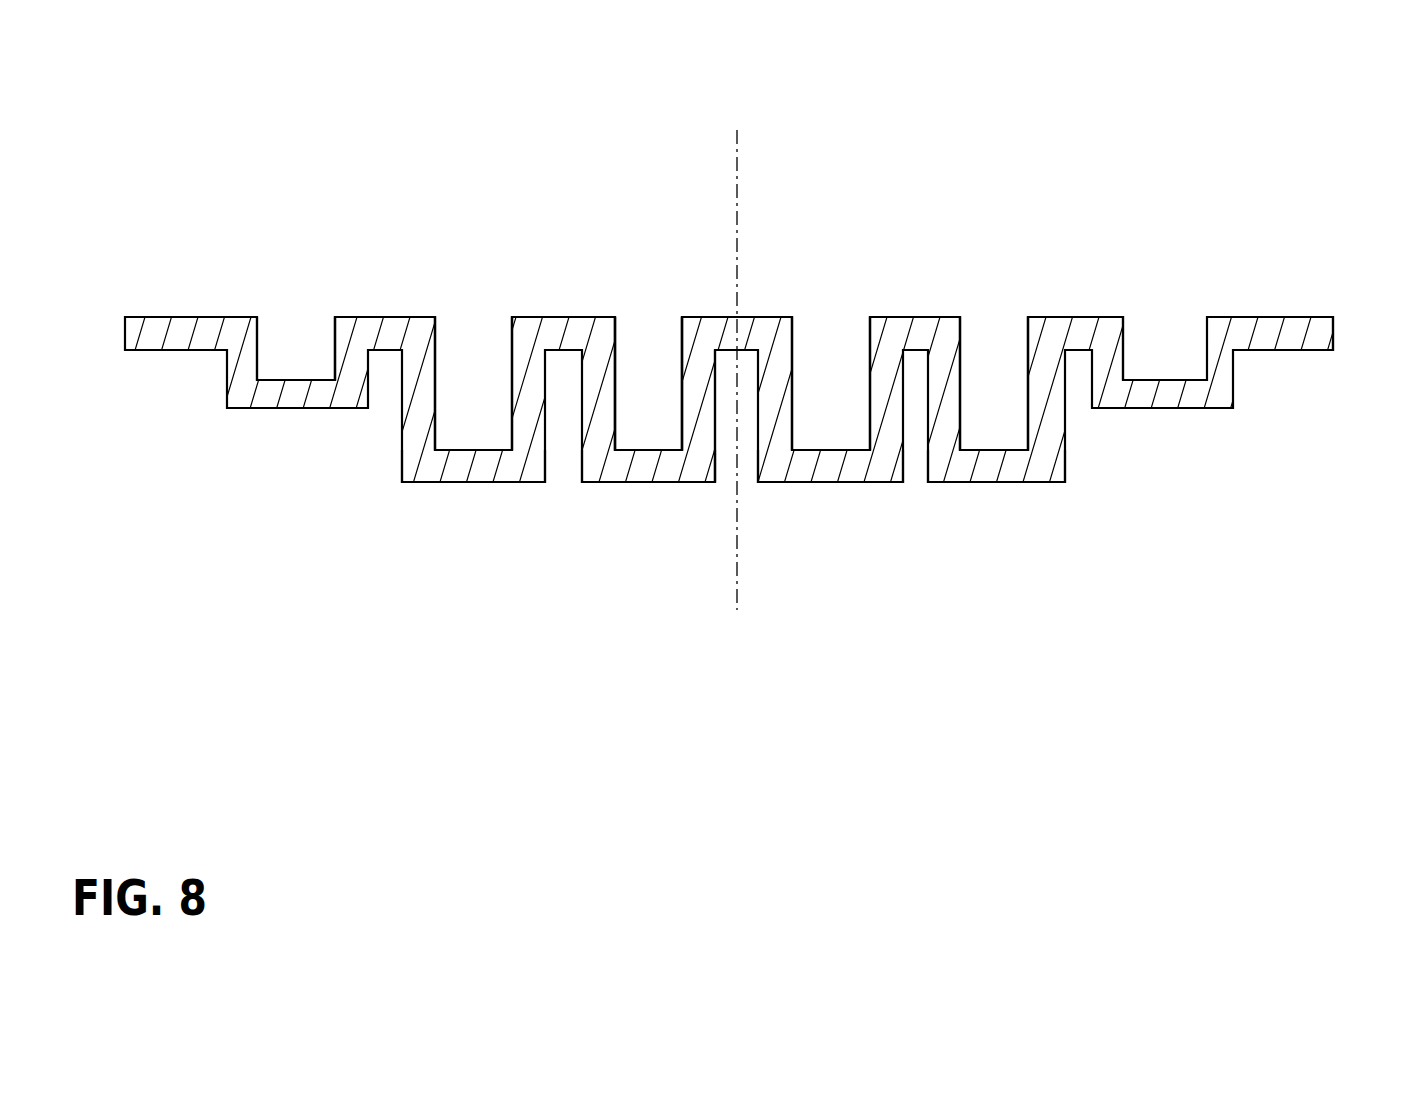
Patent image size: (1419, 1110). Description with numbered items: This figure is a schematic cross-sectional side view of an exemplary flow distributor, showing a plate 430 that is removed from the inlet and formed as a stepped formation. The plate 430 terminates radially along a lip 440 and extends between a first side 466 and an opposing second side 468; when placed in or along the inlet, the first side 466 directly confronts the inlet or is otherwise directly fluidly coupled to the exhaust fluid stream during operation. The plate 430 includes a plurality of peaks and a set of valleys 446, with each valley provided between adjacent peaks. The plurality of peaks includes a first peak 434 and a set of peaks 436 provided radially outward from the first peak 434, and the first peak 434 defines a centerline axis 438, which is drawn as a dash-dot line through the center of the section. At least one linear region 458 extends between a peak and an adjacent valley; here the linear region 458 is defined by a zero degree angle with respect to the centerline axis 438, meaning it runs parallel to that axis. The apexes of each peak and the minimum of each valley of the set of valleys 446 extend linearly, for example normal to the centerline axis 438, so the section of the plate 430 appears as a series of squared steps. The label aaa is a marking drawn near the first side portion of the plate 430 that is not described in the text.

The plate 430 is at (1212, 32).
The first peak 434 is at (748, 318).
The set of peaks 436 is at (378, 317).
The centerline axis 438 is at (737, 242).
The lip 440 is at (1337, 328).
The set of valleys 446 is at (477, 477).
The linear region 458 is at (512, 378).
The first side 466 is at (246, 445).
The second side 468 is at (602, 258).
The flange dimension label aaa is at (148, 152).